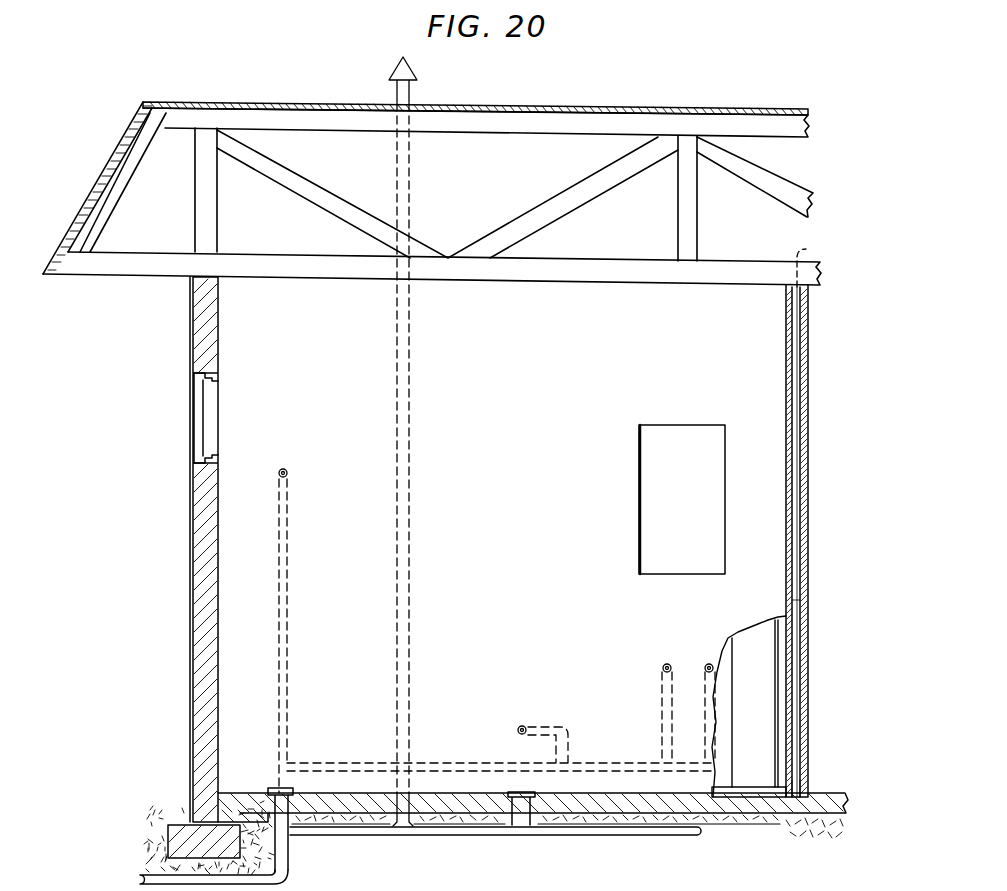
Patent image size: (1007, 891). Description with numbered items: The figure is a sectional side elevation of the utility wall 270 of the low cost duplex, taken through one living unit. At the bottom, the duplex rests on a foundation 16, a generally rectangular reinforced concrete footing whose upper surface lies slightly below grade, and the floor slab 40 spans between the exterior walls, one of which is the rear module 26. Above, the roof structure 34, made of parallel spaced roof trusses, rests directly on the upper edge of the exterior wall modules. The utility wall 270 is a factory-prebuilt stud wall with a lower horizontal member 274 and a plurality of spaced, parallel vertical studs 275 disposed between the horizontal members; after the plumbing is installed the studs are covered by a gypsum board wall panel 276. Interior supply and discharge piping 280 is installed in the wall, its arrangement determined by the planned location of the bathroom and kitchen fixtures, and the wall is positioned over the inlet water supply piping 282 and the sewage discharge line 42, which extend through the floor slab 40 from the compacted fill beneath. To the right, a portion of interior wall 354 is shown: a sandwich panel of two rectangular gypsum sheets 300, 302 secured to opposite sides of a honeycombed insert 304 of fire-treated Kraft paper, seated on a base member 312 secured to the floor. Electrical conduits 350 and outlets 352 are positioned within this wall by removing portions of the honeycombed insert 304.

The foundation 16 is at (180, 823).
The rear module 26 is at (189, 633).
The roof structure 34 is at (193, 100).
The floor slab 40 is at (249, 789).
The sewage discharge line 42 is at (471, 826).
The utility wall 270 is at (517, 521).
The lower horizontal member 274 is at (748, 790).
The vertical studs 275 is at (772, 696).
The wall panel 276 is at (749, 700).
The interior supply and discharge piping 280 is at (290, 657).
The inlet water supply piping 282 is at (290, 867).
The rectangular sheet 300 is at (804, 541).
The rectangular sheet 302 is at (789, 463).
The honeycombed insert 304 is at (797, 667).
The base member 312 is at (800, 795).
The electrical conduits 350 is at (800, 523).
The outlets 352 is at (796, 600).
The portion of interior wall 354 is at (806, 384).